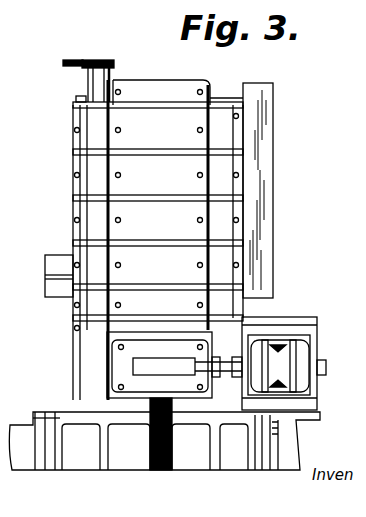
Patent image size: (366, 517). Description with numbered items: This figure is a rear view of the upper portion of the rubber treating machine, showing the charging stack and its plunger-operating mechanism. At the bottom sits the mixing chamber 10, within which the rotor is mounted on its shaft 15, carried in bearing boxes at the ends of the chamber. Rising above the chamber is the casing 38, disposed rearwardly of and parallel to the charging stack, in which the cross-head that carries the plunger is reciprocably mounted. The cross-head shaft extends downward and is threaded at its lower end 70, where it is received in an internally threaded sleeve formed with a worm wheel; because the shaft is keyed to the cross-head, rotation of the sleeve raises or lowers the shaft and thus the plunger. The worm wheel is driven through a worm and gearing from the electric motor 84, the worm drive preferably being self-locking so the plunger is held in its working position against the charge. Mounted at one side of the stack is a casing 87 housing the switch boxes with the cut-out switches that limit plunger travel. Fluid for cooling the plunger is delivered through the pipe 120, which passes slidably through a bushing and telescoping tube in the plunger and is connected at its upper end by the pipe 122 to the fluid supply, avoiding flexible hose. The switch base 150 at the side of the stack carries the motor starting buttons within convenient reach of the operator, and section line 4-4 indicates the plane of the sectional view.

The section line 4- 4 is at (152, 50).
The mixing chamber 10 is at (238, 462).
The shaft 15 is at (127, 366).
The casing 38 is at (122, 208).
The threaded lower end of shaft 70 is at (183, 463).
The electric motor 84 is at (290, 362).
The casing 87 is at (275, 97).
The pipe 120 is at (113, 76).
The pipe 122 is at (78, 64).
The switch base 150 is at (48, 268).